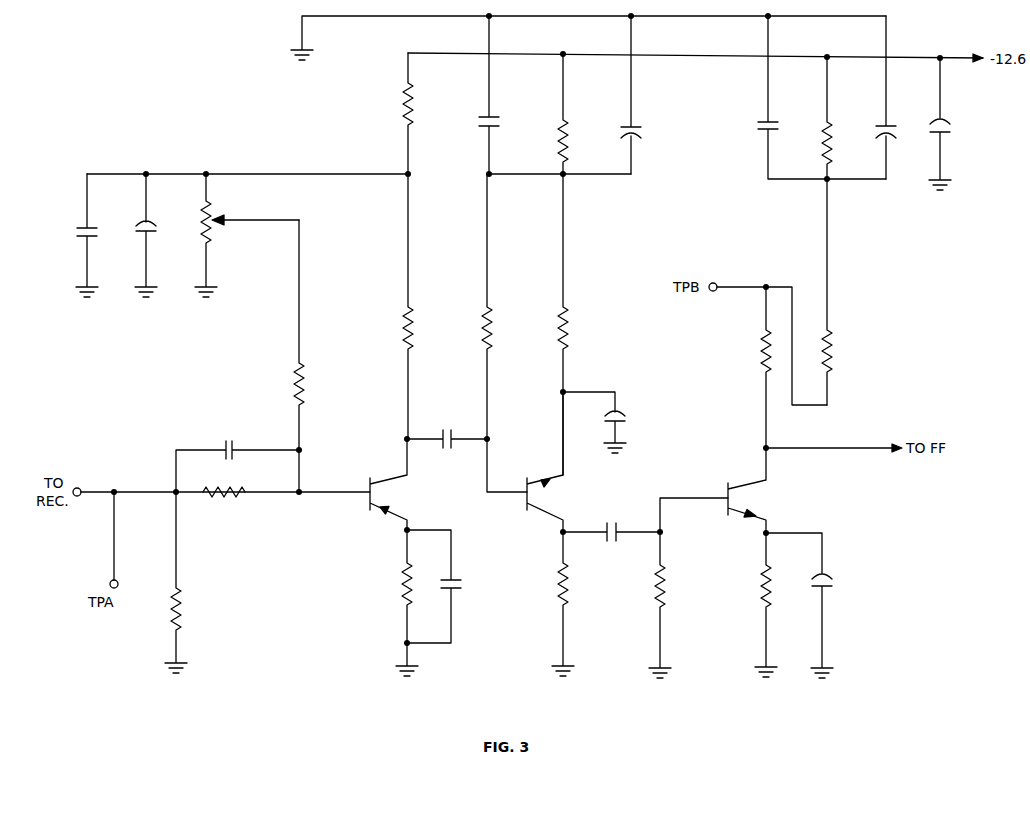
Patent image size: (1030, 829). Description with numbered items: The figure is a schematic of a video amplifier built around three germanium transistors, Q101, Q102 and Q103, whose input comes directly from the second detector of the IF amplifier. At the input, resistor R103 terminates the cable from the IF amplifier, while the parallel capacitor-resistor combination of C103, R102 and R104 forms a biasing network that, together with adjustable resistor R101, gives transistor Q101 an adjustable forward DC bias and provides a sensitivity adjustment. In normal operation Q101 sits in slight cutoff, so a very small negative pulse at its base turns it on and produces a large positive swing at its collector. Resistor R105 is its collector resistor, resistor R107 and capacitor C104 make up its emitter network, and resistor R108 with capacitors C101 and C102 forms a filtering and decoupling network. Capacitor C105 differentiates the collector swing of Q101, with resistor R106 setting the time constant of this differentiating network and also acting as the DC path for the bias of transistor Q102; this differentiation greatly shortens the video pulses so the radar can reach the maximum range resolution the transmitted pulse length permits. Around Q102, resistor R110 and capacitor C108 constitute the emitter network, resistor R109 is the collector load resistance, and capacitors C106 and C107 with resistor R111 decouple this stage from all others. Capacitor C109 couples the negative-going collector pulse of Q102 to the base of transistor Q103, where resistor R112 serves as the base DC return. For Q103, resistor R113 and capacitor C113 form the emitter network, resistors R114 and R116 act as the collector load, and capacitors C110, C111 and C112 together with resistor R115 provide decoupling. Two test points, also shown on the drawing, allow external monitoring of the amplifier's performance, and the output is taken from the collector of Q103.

The capacitor C101 is at (78, 226).
The capacitor C102 is at (158, 231).
The resistor R101 is at (214, 243).
The resistor R104 is at (308, 374).
The capacitor C103 is at (224, 440).
The resistor R102 is at (222, 504).
The resistor R103 is at (182, 608).
The transistor Q101 is at (381, 492).
The resistor R105 is at (402, 329).
The resistor R108 is at (404, 101).
The capacitor C106 is at (495, 116).
The resistor R106 is at (483, 328).
The capacitor C105 is at (458, 431).
The resistor R107 is at (400, 587).
The capacitor C104 is at (461, 586).
The resistor R111 is at (569, 148).
The capacitor C107 is at (641, 133).
The resistor R110 is at (571, 316).
The capacitor C108 is at (625, 418).
The transistor Q102 is at (538, 493).
The resistor R109 is at (569, 590).
The capacitor C109 is at (611, 545).
The resistor R112 is at (666, 570).
The transistor Q103 is at (738, 497).
The resistor R114 is at (761, 346).
The resistor R116 is at (833, 339).
The resistor R113 is at (760, 603).
The capacitor C113 is at (833, 585).
The capacitor C112 is at (758, 117).
The resistor R115 is at (834, 136).
The capacitor C110 is at (897, 136).
The capacitor C111 is at (951, 130).